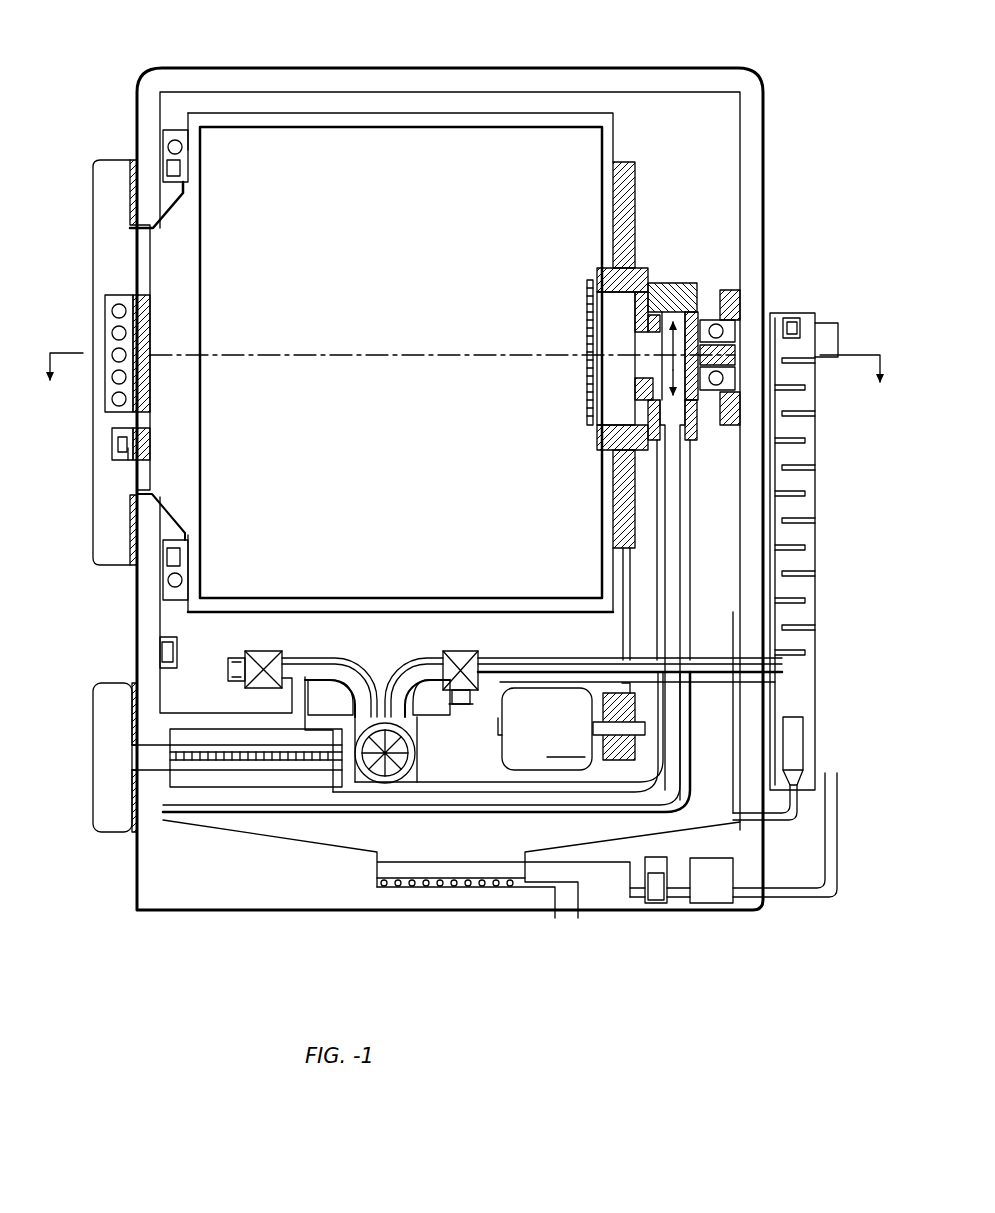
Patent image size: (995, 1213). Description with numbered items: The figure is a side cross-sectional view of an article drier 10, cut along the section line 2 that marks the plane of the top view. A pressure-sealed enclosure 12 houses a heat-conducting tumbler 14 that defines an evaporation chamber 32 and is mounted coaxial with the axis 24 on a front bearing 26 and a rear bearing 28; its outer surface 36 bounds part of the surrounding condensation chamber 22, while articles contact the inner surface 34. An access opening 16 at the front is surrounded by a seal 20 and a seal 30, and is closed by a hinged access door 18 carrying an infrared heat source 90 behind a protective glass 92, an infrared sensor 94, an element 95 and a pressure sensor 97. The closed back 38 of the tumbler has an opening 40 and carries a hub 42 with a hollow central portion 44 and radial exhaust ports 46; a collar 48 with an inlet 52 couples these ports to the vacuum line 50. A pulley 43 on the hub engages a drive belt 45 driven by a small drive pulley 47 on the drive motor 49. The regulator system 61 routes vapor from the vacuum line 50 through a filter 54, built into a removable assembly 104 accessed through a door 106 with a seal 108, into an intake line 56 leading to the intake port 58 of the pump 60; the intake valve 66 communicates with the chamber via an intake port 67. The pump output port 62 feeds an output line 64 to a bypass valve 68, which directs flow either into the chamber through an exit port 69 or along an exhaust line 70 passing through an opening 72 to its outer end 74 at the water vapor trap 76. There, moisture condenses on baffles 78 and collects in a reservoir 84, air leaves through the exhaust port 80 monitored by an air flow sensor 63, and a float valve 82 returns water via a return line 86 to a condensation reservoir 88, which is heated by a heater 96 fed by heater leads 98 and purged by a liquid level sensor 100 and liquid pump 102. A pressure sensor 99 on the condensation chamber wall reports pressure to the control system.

The article drier 10 is at (88, 88).
The enclosure 12 is at (452, 67).
The tumbler 14 is at (385, 127).
The access opening 16 is at (218, 278).
The access door 18 is at (100, 240).
The seal 20 is at (137, 190).
The condensation chamber 22 is at (438, 487).
The axis 24 is at (345, 353).
The front bearing 26 is at (175, 142).
The rear bearing 28 is at (715, 318).
The seal 30 is at (184, 200).
The evaporation chamber 32 is at (360, 413).
The inner surface 34 is at (378, 596).
The outer surface 36 is at (342, 613).
The closed back 38 is at (608, 185).
The opening 40 is at (622, 372).
The hub 42 is at (640, 268).
The pulley 43 is at (638, 200).
The hollow central portion 44 is at (640, 335).
The drive belt 45 is at (626, 642).
The exhaust ports 46 is at (668, 370).
The small drive pulley 47 is at (612, 753).
The collar 48 is at (680, 285).
The drive motor 49 is at (540, 768).
The vacuum line 50 is at (692, 543).
The inlet 52 is at (690, 418).
The filter 54 is at (256, 762).
The intake line 56 is at (330, 660).
The intake port 58 is at (368, 718).
The pump 60 is at (418, 752).
The regulator system 61 is at (402, 762).
The output port 62 is at (405, 700).
The air flow sensor 63 is at (790, 316).
The output line 64 is at (395, 668).
The intake valve 66 is at (262, 653).
The intake port 67 is at (228, 666).
The bypass valve 68 is at (462, 652).
The exit port 69 is at (464, 705).
The exhaust line 70 is at (520, 660).
The opening 72 is at (738, 660).
The outer end 74 is at (785, 682).
The water vapor trap 76 is at (822, 495).
The baffles 78 is at (808, 446).
The exhaust port 80 is at (838, 338).
The float valve 82 is at (802, 735).
The reservoir 84 is at (812, 772).
The return line 86 is at (775, 822).
The condensation reservoir 88 is at (380, 856).
The infrared heat source 90 is at (112, 333).
The protective glass 92 is at (150, 330).
The infrared sensor 94 is at (112, 447).
The sensor mount 95 is at (150, 447).
The heater 96 is at (410, 890).
The pressure sensor 97 is at (130, 457).
The heater leads 98 is at (566, 905).
The pressure sensor 99 is at (160, 648).
The liquid level sensor 100 is at (655, 905).
The liquid pump 102 is at (715, 880).
The assembly 104 is at (150, 772).
The door 106 is at (107, 758).
The seal 108 is at (136, 686).
The section line 2— 2 is at (464, 383).